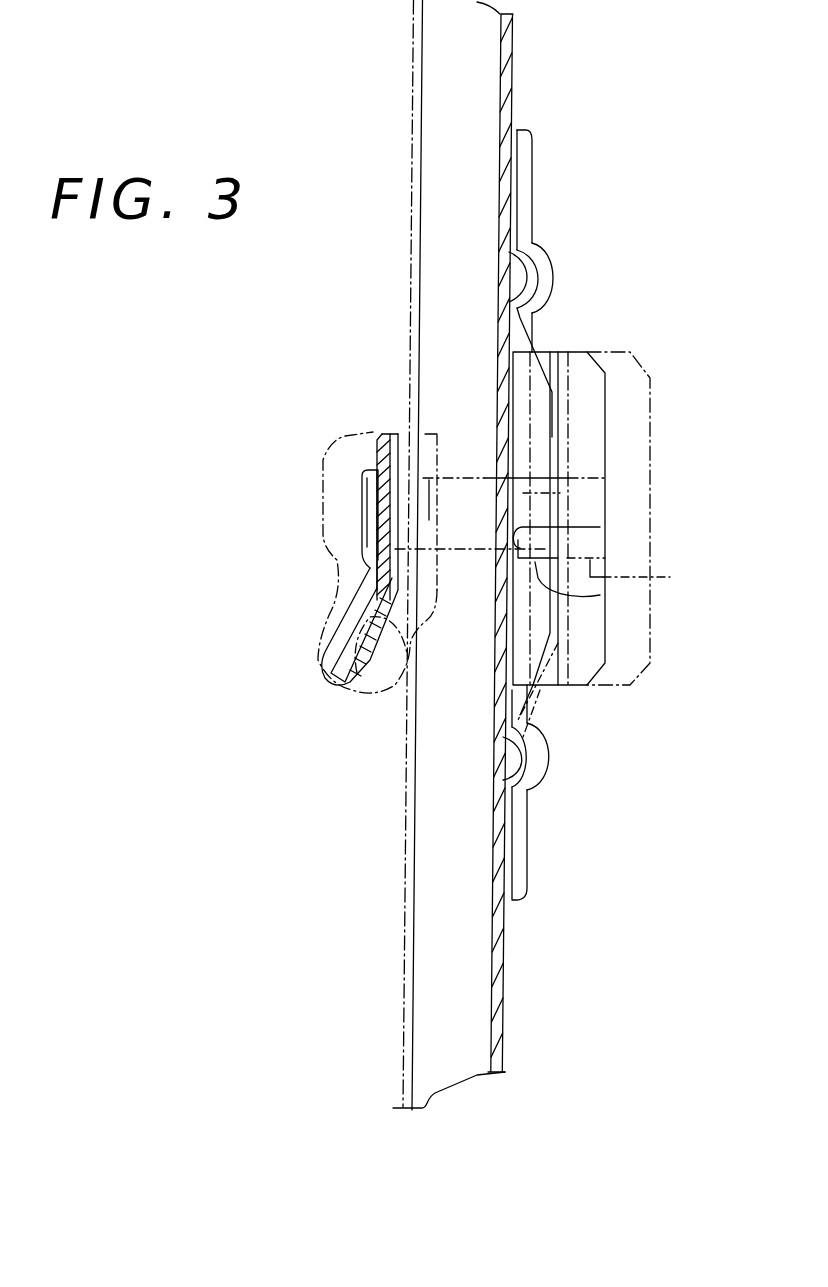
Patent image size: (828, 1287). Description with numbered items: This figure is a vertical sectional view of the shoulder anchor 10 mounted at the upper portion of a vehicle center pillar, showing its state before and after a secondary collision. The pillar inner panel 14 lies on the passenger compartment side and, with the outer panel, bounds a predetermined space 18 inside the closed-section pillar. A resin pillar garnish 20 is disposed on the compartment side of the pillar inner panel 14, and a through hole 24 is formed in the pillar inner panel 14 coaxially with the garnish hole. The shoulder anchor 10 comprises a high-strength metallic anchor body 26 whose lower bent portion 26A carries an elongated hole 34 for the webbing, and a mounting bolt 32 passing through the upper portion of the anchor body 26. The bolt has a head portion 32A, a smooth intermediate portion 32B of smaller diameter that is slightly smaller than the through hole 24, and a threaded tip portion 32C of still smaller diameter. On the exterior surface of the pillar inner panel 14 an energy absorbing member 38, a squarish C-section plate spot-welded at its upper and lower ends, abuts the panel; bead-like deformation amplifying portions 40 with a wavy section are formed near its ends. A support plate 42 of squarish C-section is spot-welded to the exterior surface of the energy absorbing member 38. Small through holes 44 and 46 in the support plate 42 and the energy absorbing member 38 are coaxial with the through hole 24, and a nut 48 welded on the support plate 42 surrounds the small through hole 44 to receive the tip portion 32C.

The shoulder anchor 10 is at (373, 695).
The pillar inner panel 14 is at (512, 43).
The space 18 is at (572, 133).
The pillar garnish 20 is at (412, 90).
The through hole 24 is at (495, 540).
The anchor body 26 is at (363, 473).
The lower bent portion 26A is at (374, 590).
The mounting bolt 32 is at (424, 470).
The head portion 32A is at (373, 524).
The intermediate portion 32B is at (478, 478).
The tip portion 32C is at (567, 510).
The elongated hole 34 is at (358, 617).
The energy absorbing member 38 is at (530, 853).
The deformation amplifying portions 40 is at (545, 273).
The support plate 42 is at (607, 383).
The small through hole 44 is at (531, 513).
The small through hole 46 is at (600, 527).
The nut 48 is at (600, 595).